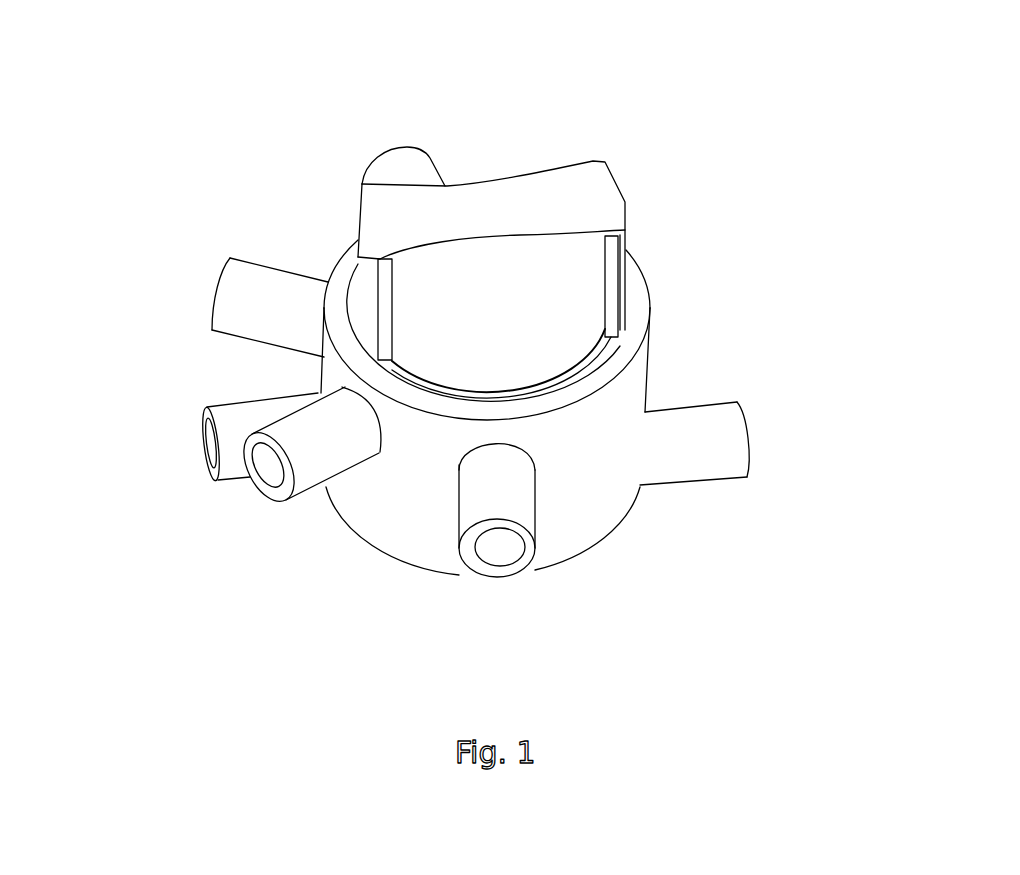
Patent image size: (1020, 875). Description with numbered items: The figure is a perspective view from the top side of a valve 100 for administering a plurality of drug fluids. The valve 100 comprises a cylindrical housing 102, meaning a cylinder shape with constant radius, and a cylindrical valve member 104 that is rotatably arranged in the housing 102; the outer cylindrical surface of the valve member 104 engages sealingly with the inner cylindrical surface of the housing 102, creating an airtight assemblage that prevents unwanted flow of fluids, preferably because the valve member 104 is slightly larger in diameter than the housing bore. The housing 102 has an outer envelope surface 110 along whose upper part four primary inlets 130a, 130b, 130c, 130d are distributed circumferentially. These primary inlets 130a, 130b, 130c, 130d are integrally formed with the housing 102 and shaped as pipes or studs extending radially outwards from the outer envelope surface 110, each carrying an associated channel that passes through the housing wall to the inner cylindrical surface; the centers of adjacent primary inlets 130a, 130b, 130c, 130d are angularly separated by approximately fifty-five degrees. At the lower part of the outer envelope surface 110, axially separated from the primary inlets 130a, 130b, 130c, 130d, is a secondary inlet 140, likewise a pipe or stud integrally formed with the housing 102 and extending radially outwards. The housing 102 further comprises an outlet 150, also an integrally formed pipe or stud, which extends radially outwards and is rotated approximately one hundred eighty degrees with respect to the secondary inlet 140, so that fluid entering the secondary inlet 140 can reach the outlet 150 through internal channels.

The valve 100 is at (479, 355).
The cylindrical housing 102 is at (635, 392).
The cylindrical valve member 104 is at (532, 208).
The outer envelope surface 110 is at (597, 503).
The primary inlet 130a is at (416, 158).
The primary inlet 130b is at (225, 303).
The primary inlet 130c is at (316, 471).
The primary inlet 130d is at (491, 509).
The secondary inlet 140 is at (225, 457).
The outlet 150 is at (736, 446).